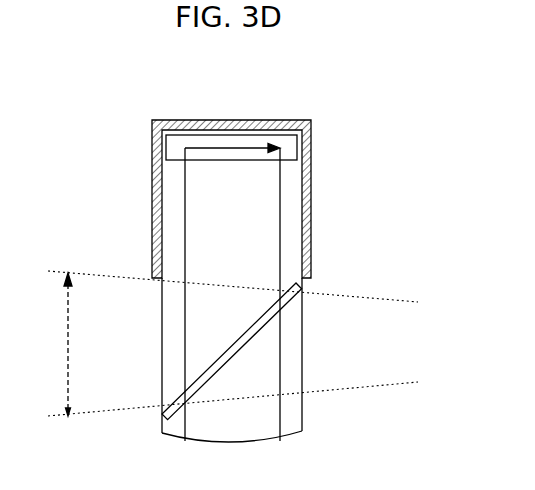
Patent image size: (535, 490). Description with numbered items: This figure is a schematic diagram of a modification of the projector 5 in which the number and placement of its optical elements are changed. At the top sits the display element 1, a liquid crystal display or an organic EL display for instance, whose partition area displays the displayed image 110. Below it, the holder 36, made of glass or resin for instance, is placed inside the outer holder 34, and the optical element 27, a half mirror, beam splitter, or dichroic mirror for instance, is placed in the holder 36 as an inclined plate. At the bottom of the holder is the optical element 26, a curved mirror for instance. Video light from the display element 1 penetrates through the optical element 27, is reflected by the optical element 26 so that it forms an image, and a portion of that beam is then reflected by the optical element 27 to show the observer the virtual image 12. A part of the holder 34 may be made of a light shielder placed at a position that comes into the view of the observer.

The display element 1 is at (208, 142).
The displayed image 110 is at (248, 145).
The holder 34 is at (307, 178).
The holder 36 is at (292, 223).
The optical element 26 is at (212, 444).
The optical element 27 is at (265, 313).
The virtual image 12 is at (66, 333).
The projector 5 is at (112, 186).